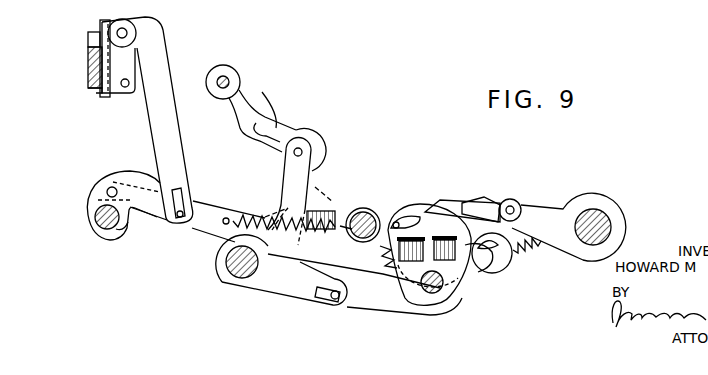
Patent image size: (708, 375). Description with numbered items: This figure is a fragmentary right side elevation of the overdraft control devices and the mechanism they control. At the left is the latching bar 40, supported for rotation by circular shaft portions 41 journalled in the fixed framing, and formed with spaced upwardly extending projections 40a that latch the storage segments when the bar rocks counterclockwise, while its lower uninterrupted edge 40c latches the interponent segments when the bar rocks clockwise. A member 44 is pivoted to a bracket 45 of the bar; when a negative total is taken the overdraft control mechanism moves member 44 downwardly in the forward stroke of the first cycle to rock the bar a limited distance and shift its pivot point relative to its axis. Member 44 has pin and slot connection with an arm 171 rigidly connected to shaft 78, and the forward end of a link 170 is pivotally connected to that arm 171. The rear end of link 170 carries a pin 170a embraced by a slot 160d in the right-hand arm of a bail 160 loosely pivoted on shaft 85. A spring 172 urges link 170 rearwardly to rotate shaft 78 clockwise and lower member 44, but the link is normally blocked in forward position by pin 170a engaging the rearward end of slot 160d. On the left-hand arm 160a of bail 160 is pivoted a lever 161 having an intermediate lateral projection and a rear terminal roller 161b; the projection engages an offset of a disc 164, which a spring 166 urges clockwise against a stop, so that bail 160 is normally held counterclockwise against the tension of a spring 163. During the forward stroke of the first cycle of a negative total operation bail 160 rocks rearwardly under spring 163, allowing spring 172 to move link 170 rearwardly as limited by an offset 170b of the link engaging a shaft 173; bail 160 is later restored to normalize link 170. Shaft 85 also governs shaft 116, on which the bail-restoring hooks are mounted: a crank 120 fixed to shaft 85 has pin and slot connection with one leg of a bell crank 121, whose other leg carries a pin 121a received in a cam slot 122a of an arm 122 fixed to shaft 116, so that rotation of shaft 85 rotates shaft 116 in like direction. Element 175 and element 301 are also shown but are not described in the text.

The bar 40 is at (88, 73).
The projections 40a is at (100, 27).
The lower uninterrupted edge 40c is at (96, 92).
The circular shaft portions 41 is at (88, 43).
The member 44 is at (168, 98).
The bracket 45 is at (127, 97).
The shaft 78 is at (120, 224).
The shaft 85 is at (443, 290).
The shaft 116 is at (228, 74).
The crank 120 is at (373, 298).
The bell crank 121 is at (270, 282).
The pin 121a is at (298, 147).
The arm 122 is at (250, 142).
The cam slot 122a is at (259, 93).
The bail 160 is at (390, 208).
The left-hand arm 160a is at (466, 272).
The slot 160d is at (396, 221).
The lever 161 is at (488, 205).
The rear terminal roller 161b is at (520, 200).
The spring 163 is at (397, 253).
The disc 164 is at (478, 274).
The spring 166 is at (534, 258).
The link 170 is at (212, 225).
The pin 170a is at (443, 212).
The offset 170b is at (322, 198).
The arm 171 is at (88, 208).
The spring 172 is at (246, 212).
The shaft 173 is at (360, 209).
The arm 175 is at (590, 197).
The pin 301 is at (613, 233).